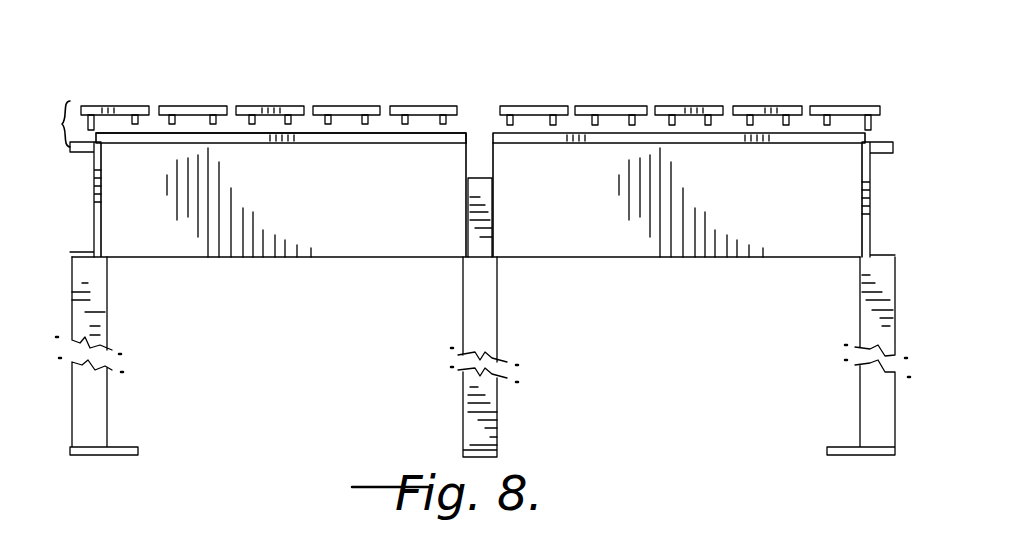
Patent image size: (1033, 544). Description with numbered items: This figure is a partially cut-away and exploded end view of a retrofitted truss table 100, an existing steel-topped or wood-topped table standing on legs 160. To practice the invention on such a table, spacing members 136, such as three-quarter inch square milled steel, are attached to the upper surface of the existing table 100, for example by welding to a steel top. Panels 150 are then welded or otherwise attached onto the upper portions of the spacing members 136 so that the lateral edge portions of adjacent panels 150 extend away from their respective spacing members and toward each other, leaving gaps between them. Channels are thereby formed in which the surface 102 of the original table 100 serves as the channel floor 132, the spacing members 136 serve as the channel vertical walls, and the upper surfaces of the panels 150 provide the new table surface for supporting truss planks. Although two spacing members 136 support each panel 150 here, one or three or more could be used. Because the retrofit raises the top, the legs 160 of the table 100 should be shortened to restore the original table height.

The existing table 100 is at (320, 248).
The surface of the original table 102 is at (503, 140).
The channel floor 132 is at (310, 134).
The spacing members 136 is at (134, 124).
The panels 150 is at (183, 106).
The legs 160 is at (105, 315).